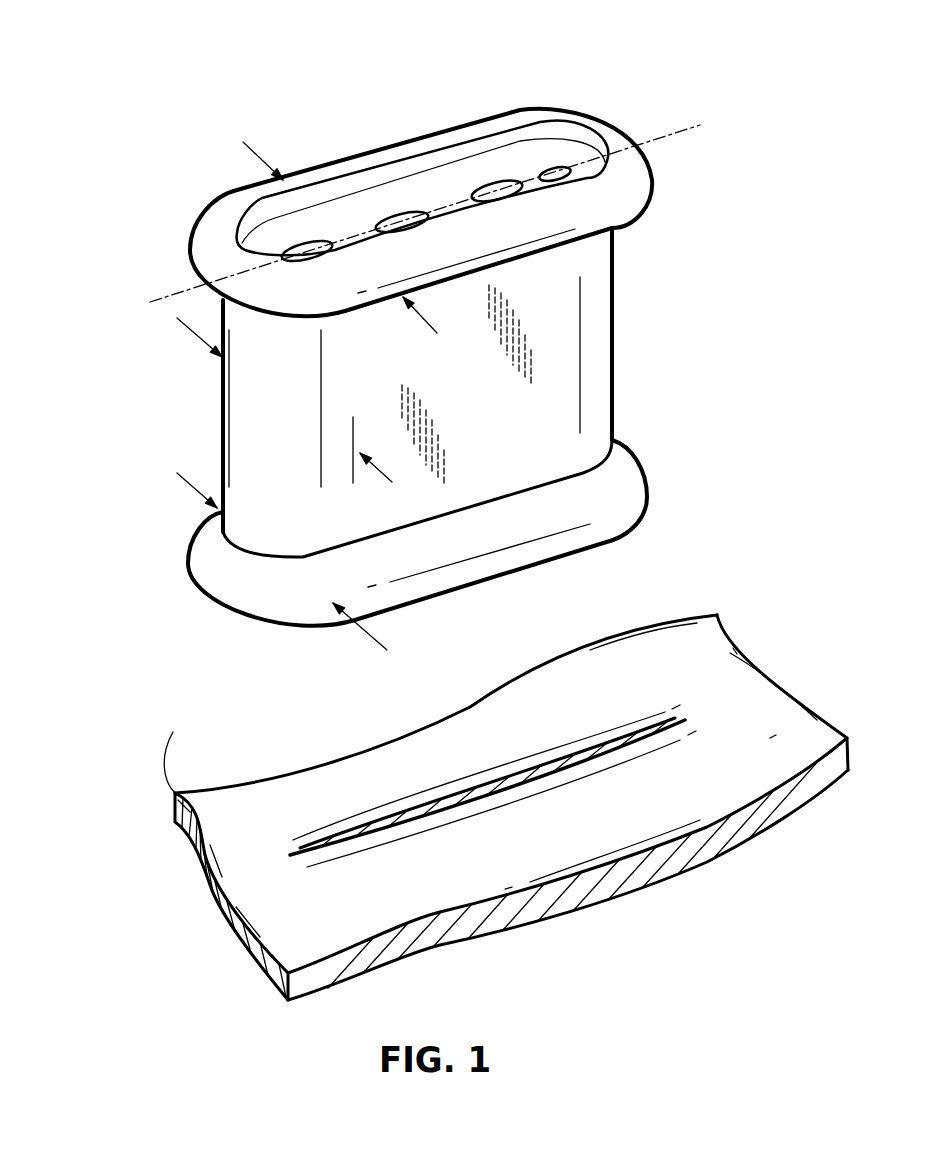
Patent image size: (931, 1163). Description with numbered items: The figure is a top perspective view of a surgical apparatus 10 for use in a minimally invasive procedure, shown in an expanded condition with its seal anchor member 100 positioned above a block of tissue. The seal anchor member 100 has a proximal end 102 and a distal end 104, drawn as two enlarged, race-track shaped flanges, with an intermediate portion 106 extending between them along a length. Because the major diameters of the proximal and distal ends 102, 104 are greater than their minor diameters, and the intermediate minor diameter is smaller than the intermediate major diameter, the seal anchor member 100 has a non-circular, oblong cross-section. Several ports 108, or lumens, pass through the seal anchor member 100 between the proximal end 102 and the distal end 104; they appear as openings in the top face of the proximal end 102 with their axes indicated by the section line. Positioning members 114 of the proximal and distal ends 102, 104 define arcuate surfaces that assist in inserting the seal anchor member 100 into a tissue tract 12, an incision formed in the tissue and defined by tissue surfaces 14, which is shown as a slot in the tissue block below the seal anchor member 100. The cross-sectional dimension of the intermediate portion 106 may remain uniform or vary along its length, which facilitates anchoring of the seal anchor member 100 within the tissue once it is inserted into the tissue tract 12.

The surgical apparatus 10 is at (140, 113).
The seal anchor member 100 is at (155, 229).
The proximal end 102 is at (597, 207).
The distal end 104 is at (613, 490).
The intermediate portion 106 is at (547, 333).
The ports 108 is at (552, 167).
The positioning members 114 is at (227, 560).
The tissue tract 12 is at (357, 817).
The tissue surfaces 14 is at (763, 727).